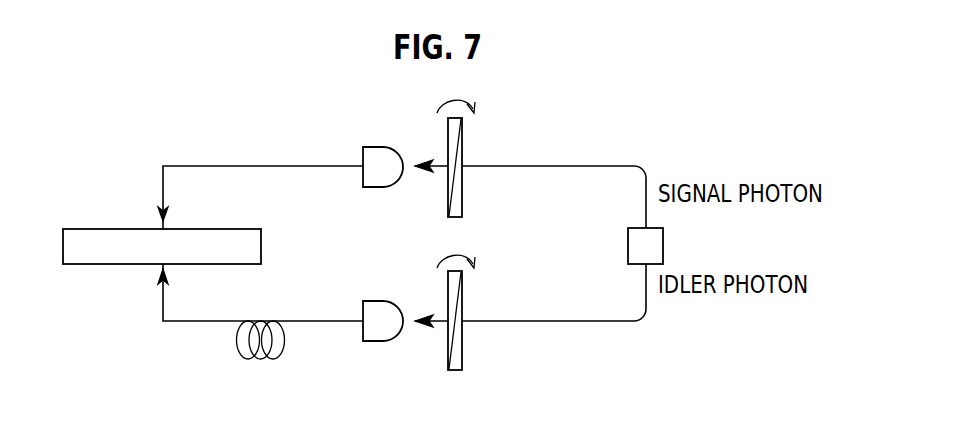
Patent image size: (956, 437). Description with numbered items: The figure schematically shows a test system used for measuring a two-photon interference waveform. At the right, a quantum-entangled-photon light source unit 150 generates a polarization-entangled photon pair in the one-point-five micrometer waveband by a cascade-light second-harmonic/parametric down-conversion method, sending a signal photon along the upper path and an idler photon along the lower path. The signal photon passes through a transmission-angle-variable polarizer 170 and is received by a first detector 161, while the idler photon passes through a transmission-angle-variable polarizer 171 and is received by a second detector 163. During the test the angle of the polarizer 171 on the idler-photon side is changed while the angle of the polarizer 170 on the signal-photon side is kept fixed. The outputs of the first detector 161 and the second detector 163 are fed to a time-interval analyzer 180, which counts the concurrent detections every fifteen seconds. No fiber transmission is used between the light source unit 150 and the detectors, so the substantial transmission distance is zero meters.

The quantum-entangled-photon light source unit 150 is at (663, 245).
The first detector 161 is at (383, 147).
The second detector 163 is at (383, 341).
The transmission-angle-variable polarizer 170 is at (462, 199).
The transmission-angle-variable polarizer 171 is at (462, 353).
The time-interval analyzer 180 is at (100, 229).